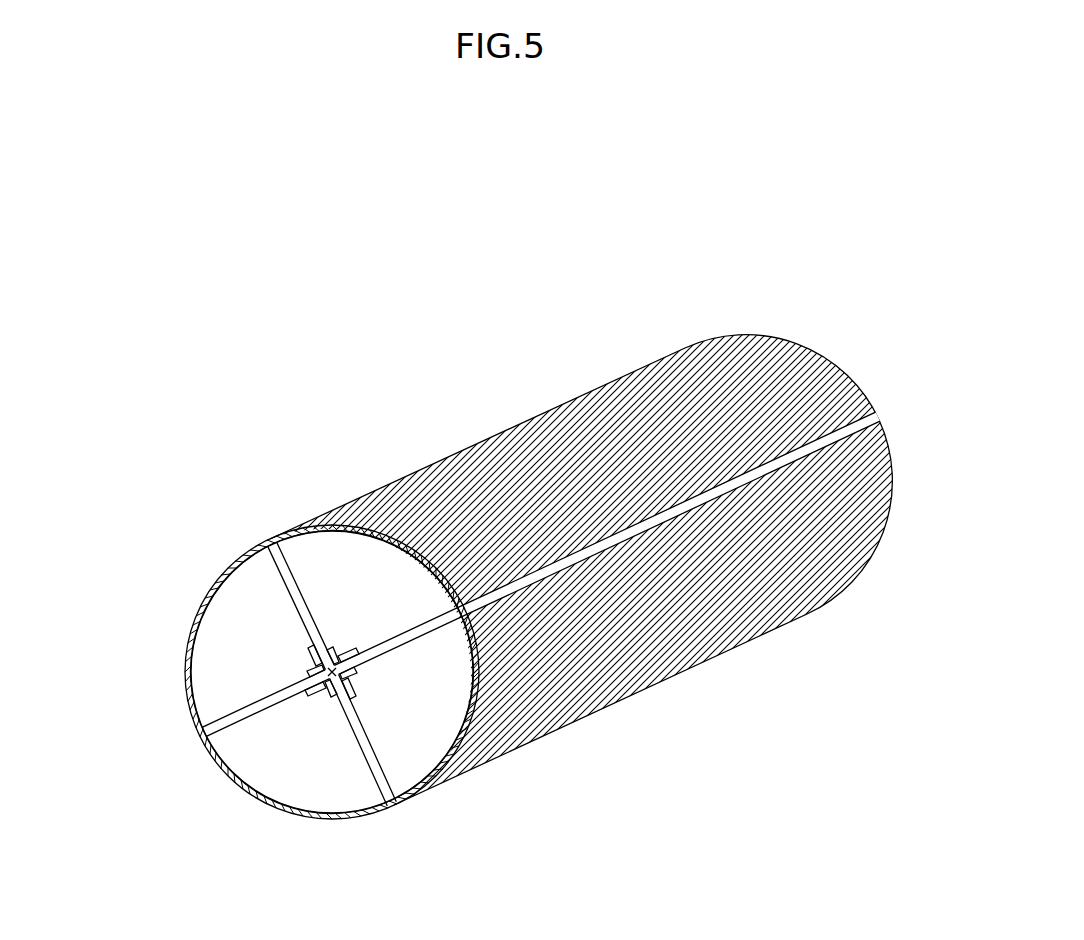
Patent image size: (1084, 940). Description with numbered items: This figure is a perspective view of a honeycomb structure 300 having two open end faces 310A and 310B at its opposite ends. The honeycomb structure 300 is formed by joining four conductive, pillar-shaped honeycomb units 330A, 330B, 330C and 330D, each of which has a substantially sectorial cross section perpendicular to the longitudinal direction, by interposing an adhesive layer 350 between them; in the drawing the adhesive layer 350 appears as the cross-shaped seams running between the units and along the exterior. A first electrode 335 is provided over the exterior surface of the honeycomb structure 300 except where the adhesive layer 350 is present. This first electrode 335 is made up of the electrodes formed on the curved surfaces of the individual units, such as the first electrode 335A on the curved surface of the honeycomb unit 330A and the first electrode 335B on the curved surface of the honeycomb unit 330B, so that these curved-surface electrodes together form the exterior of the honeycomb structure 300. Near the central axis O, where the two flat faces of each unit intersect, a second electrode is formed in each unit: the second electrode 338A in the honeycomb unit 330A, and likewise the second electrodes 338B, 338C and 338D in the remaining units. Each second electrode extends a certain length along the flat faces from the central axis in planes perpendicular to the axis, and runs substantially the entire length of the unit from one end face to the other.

The honeycomb structure 300 is at (593, 238).
The open end face 310A is at (160, 774).
The open end face 310B is at (845, 330).
The honeycomb unit 330A is at (305, 562).
The honeycomb unit 330B is at (407, 747).
The honeycomb unit 330C is at (297, 770).
The honeycomb unit 330D is at (220, 659).
The first electrode 335 is at (542, 570).
The first electrode 335A is at (493, 453).
The first electrode 335B is at (643, 653).
The second electrode 338A is at (333, 653).
The second electrode 338B is at (352, 682).
The second electrode 338C is at (330, 693).
The second electrode 338D is at (307, 650).
The adhesive layer 350 is at (598, 548).
The central axis O is at (335, 665).